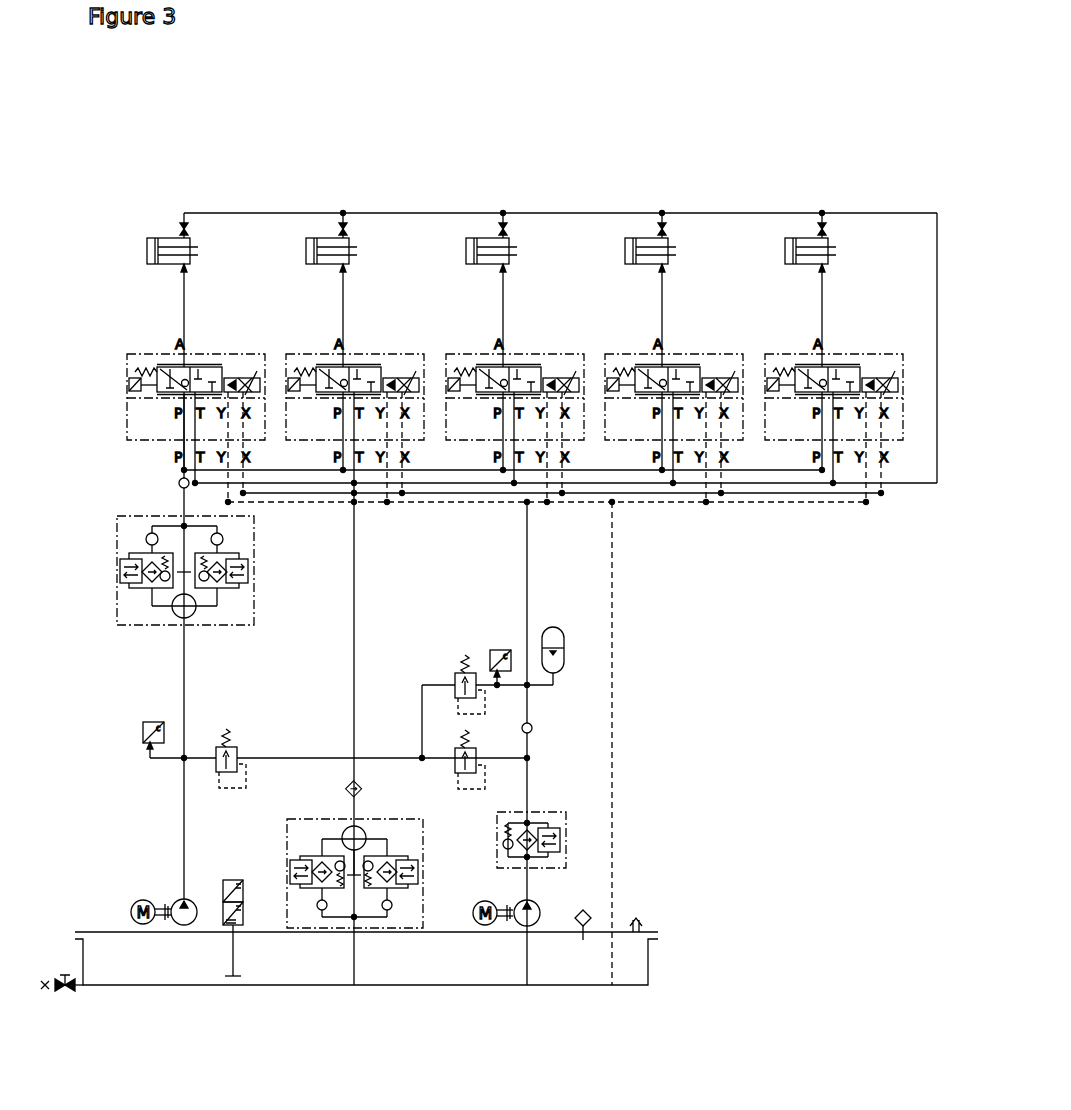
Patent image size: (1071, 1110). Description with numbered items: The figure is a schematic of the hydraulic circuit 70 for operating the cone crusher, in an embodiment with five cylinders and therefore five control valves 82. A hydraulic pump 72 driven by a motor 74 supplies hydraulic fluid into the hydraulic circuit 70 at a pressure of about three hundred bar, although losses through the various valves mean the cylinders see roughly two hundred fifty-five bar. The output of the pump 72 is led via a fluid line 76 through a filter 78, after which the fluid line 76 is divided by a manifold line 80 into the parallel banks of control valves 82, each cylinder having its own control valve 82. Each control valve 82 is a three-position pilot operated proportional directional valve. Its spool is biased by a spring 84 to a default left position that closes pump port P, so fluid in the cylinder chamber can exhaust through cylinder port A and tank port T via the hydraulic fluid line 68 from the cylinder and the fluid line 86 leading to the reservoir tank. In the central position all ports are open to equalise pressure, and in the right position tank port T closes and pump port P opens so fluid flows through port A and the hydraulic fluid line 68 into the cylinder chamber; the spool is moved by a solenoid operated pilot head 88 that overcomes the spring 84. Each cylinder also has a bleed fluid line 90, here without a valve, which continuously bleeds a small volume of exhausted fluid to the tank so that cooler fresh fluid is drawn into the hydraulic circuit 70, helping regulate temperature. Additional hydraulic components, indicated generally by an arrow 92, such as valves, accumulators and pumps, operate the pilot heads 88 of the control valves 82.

The hydraulic circuit 70 is at (123, 177).
The bleed fluid line 90 is at (323, 213).
The hydraulic fluid line 68 is at (184, 301).
The control valve 82 is at (168, 366).
The spring 84 is at (127, 372).
The solenoid operated pilot head 88 is at (238, 374).
The fluid line 86 is at (184, 432).
The manifold line 80 is at (184, 505).
The filter 78 is at (117, 594).
The fluid line 76 is at (184, 693).
The hydraulic pump 72 is at (184, 900).
The motor 74 is at (131, 905).
The additional hydraulic components 92 is at (583, 731).